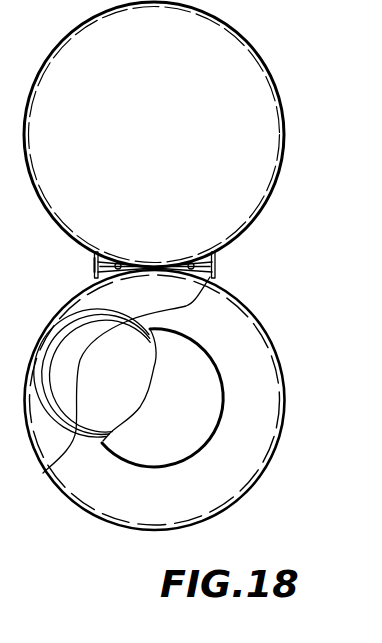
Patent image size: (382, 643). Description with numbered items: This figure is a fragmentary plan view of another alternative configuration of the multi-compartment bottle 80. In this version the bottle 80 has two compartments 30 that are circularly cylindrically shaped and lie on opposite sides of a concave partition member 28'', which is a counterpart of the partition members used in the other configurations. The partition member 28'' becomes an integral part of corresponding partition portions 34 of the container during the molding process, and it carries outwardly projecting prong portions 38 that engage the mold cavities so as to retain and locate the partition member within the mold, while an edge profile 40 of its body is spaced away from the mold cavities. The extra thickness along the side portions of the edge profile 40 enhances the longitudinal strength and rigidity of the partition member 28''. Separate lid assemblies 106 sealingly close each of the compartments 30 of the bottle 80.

The compartments 30 is at (213, 190).
The partition member 28'' is at (155, 248).
The partition portions 34 is at (113, 250).
The prong portions 38 is at (216, 262).
The edge profile 40 is at (94, 262).
The lid assembly 106 is at (195, 440).
The bottle 80 is at (74, 523).